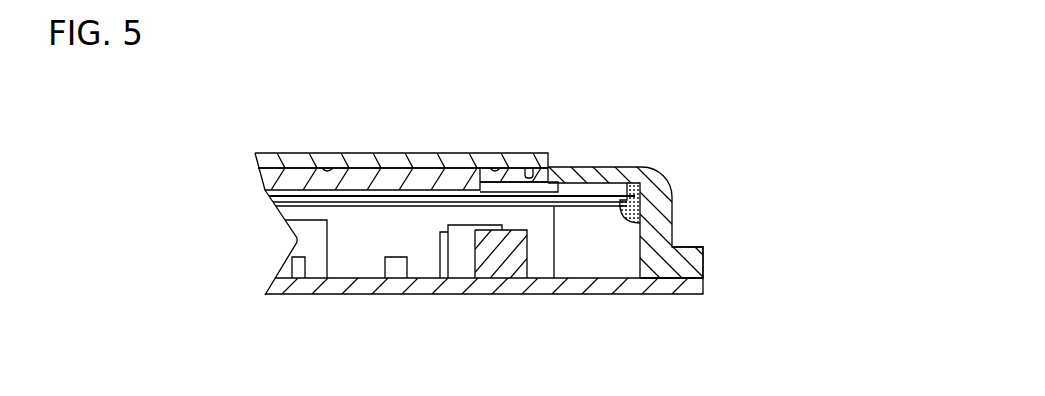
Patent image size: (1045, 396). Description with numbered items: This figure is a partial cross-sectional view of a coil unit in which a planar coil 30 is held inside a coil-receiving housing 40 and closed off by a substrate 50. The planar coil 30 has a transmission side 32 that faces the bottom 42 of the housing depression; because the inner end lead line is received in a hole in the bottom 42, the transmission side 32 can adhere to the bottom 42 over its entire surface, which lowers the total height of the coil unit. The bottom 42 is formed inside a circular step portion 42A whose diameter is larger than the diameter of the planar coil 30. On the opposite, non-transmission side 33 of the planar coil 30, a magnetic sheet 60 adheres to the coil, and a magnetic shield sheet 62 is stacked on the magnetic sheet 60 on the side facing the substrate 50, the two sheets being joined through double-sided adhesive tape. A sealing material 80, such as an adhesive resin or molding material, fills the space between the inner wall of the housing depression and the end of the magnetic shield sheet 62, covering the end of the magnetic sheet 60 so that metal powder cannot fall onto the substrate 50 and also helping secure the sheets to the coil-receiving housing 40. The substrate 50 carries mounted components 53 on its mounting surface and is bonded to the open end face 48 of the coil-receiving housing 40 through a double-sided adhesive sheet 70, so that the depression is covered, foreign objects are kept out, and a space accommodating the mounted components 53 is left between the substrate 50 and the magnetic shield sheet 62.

The planar coil 30 is at (394, 170).
The transmission side 32 is at (327, 167).
The non-transmission side 33 is at (300, 207).
The coil-receiving housing 40 is at (610, 166).
The bottom 42 is at (505, 164).
The step portion 42A is at (529, 167).
The open end face 48 is at (676, 272).
The substrate 50 is at (562, 285).
The mounted components 53 is at (462, 270).
The magnetic sheet 60 is at (283, 197).
The magnetic shield sheet 62 is at (358, 208).
The double-sided adhesive sheet 70 is at (708, 281).
The sealing material 80 is at (638, 198).